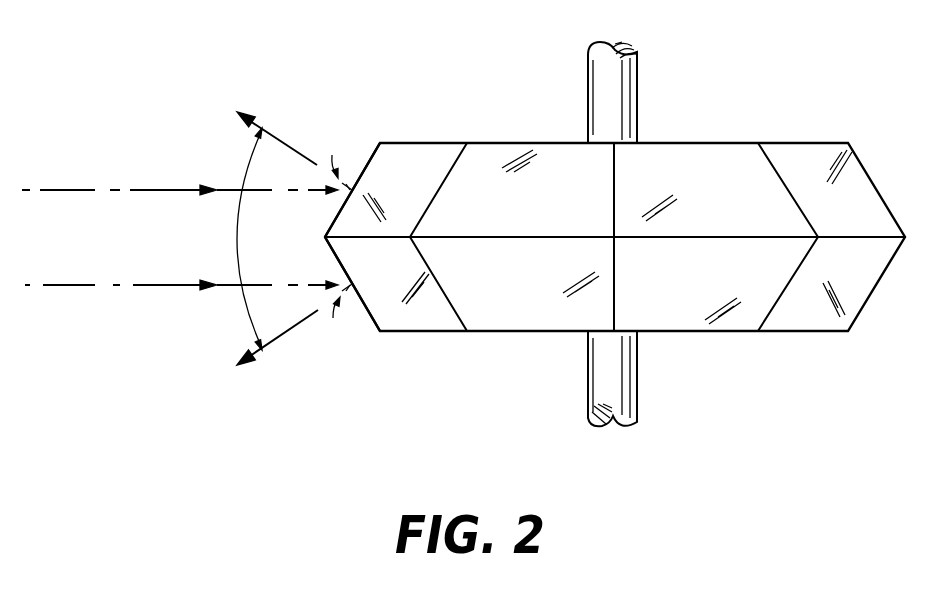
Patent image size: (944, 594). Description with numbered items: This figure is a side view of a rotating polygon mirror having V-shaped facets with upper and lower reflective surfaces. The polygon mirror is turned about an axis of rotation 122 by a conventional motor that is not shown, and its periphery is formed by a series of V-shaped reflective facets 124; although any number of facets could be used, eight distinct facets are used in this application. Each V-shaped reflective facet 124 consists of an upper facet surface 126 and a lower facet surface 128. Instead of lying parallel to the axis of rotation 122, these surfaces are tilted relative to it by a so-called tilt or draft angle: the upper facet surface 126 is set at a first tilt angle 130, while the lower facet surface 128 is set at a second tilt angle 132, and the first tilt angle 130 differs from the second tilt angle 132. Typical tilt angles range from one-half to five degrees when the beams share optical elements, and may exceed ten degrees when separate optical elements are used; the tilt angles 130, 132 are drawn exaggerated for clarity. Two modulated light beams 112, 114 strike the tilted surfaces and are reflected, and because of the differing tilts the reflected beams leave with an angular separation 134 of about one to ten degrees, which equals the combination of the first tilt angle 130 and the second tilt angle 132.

The modulated light beam 112 is at (135, 190).
The modulated light beam 114 is at (135, 285).
The axis of rotation 122 is at (618, 107).
The V-shaped reflective facet 124 is at (318, 104).
The upper facet surface 126 is at (358, 165).
The lower facet surface 128 is at (361, 308).
The first tilt angle 130 is at (331, 200).
The second tilt angle 132 is at (330, 280).
The angular separation 134 is at (237, 243).